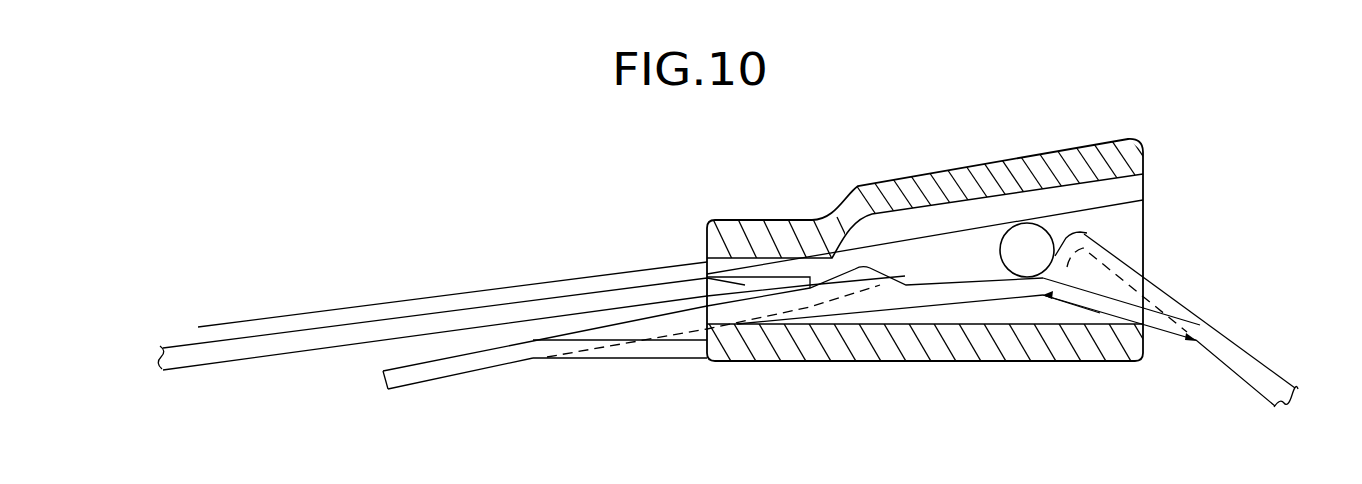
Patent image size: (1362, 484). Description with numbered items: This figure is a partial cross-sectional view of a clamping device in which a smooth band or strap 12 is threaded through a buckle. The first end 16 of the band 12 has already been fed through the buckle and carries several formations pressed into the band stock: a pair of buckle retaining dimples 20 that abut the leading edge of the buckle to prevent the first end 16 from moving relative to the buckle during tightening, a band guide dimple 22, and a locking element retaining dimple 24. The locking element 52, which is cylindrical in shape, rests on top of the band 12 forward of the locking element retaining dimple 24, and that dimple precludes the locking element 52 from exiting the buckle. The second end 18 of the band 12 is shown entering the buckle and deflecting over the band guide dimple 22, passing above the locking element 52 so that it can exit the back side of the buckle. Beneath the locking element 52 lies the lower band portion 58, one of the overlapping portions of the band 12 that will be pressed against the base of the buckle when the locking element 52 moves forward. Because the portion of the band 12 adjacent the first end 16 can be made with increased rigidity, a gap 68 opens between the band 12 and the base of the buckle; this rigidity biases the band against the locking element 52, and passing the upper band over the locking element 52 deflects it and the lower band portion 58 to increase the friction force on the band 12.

The band or strap 12 is at (1207, 343).
The first end of the band 16 is at (447, 367).
The second end of the band 18 is at (682, 263).
The buckle retaining dimples 20 is at (683, 343).
The band guide dimple 22 is at (865, 277).
The locking element retaining dimple 24 is at (1087, 233).
The locking element 52 is at (1015, 246).
The lower band portion 58 is at (975, 290).
The gap 68 is at (1047, 306).